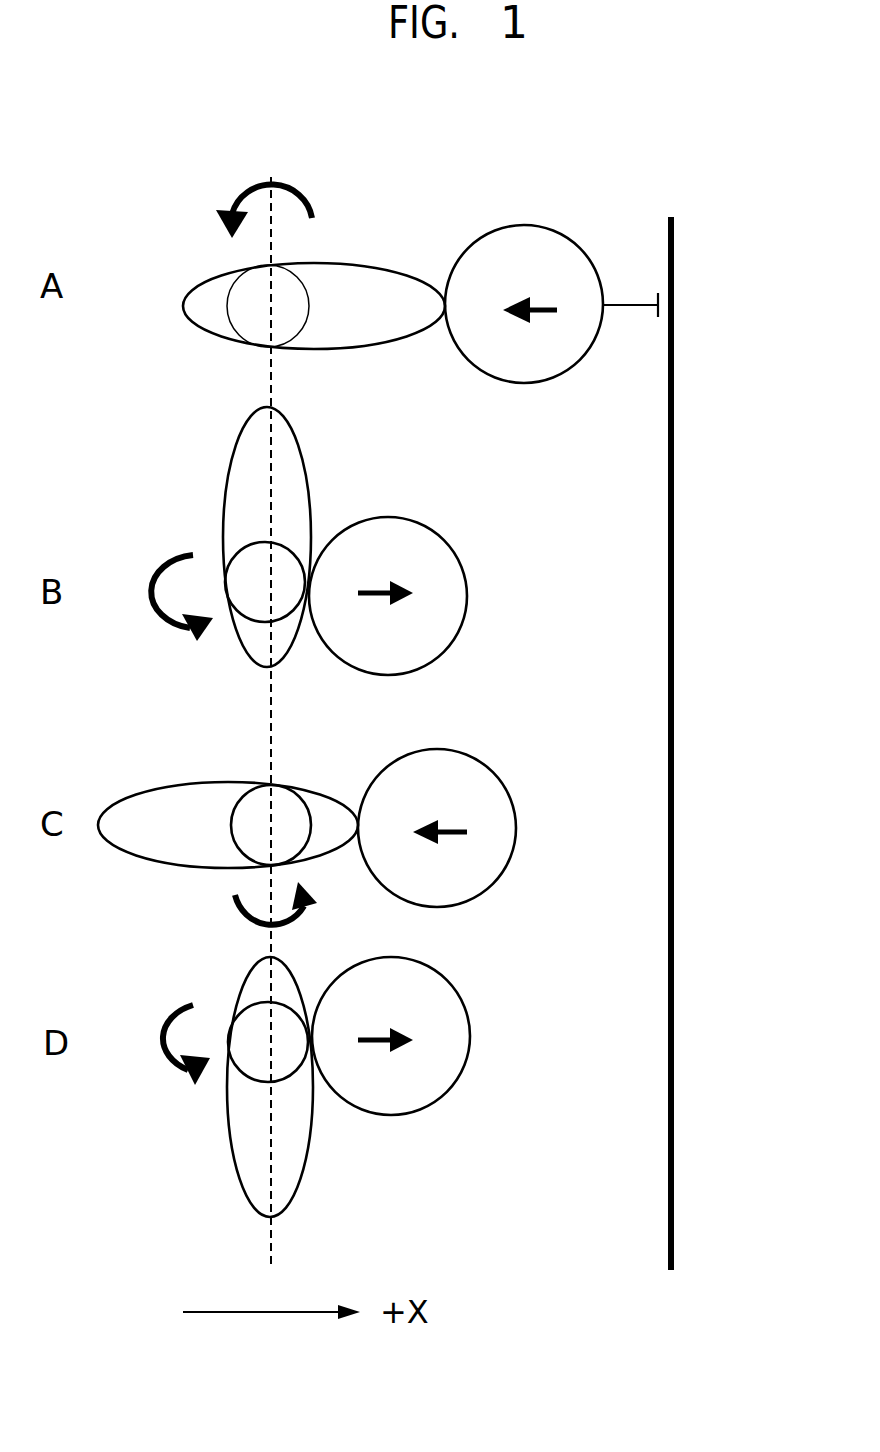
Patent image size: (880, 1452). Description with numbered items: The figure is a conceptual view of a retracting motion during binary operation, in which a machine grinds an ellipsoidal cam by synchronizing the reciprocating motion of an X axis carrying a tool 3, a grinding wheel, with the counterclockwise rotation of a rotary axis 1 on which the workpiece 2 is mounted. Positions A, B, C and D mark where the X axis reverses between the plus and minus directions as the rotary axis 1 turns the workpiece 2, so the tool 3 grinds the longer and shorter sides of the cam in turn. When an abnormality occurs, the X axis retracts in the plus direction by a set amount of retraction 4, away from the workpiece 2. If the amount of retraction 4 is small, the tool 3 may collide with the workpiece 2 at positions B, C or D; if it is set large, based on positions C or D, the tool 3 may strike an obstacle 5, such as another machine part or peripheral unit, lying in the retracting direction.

The rotary axis 1 is at (304, 323).
The workpiece 2 is at (358, 263).
The tool 3 is at (578, 245).
The amount of retraction 4 is at (632, 293).
The obstacle 5 is at (672, 658).